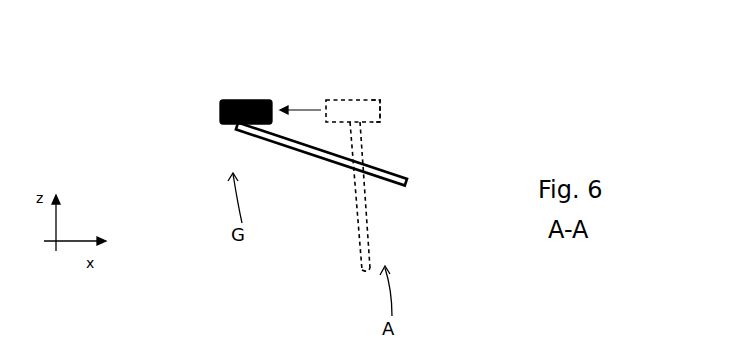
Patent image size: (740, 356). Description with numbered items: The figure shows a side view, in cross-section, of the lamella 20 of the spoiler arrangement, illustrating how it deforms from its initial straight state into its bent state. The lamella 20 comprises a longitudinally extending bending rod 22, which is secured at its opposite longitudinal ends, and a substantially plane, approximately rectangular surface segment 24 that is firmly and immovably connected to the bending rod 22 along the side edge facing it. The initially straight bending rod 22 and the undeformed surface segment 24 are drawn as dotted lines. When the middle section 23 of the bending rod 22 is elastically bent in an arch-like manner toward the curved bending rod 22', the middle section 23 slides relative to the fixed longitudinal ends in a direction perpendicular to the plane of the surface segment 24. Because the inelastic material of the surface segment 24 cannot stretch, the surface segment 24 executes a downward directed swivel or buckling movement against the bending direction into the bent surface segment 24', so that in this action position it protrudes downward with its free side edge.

The lamella 20 is at (218, 51).
The arch-like curved bending rod 22' is at (246, 80).
The bending rod 22 is at (349, 80).
The middle section 23 is at (370, 100).
The bent surface segment 24' is at (321, 172).
The surface segment 24 is at (404, 196).